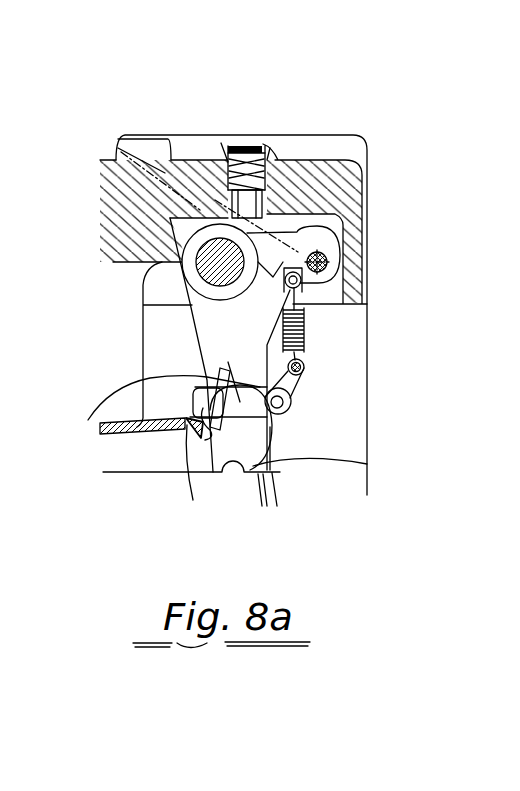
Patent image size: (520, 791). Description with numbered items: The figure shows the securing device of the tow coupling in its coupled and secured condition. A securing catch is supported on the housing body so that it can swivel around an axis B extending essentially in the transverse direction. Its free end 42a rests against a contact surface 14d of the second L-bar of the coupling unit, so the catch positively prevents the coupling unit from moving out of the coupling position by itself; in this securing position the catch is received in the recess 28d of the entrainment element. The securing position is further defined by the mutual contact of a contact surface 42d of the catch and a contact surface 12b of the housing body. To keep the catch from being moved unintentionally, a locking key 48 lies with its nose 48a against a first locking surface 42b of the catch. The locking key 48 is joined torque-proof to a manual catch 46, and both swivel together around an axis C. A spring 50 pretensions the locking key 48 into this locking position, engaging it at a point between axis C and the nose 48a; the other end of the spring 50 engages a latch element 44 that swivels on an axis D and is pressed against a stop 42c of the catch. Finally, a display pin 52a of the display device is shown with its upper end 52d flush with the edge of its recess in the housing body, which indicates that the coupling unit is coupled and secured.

The manual catch 46 is at (169, 172).
The upper end of the display pin 52d is at (250, 140).
The display pin 52a is at (280, 152).
The locking key 48 is at (322, 238).
The axis C is at (320, 262).
The contact surface of the securing catch 42d is at (166, 264).
The contact surface of the housing body 12b is at (140, 290).
The first locking surface 42b is at (366, 303).
The axis B is at (217, 267).
The nose 48a is at (305, 332).
The spring 50 is at (305, 357).
The latch element 44 is at (137, 406).
The axis D is at (290, 412).
The free end of the securing catch 42a is at (330, 487).
The stop of the securing catch 42c is at (243, 426).
The recess of the entrainment element 28d is at (193, 500).
The contact surface of the second L-bar 14d is at (216, 465).